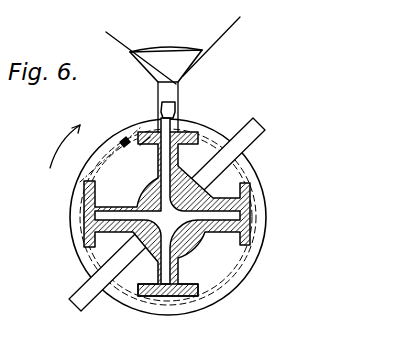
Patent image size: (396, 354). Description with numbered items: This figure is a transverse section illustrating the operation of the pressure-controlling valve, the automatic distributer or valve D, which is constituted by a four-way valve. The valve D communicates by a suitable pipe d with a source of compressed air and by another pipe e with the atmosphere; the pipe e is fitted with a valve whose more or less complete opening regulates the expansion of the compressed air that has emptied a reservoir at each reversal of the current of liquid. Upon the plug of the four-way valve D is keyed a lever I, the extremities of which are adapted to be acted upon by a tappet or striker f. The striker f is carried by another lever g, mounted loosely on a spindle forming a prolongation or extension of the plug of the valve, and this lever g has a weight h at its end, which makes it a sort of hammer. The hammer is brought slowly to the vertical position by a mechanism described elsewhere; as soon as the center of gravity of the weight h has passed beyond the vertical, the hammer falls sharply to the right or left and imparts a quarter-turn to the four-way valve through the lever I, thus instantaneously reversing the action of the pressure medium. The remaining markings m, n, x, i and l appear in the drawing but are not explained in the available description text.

The funnel guide line m is at (136, 58).
The funnel guide line n is at (209, 52).
The weight h is at (166, 65).
The lever g is at (158, 96).
The tappet or striker f is at (178, 108).
The direction of rotation x is at (57, 146).
The pin i is at (111, 156).
The port l is at (137, 153).
The pipe e is at (177, 152).
The automatic distributer or valve D is at (190, 241).
The lever I is at (256, 136).
The pipe d is at (166, 296).